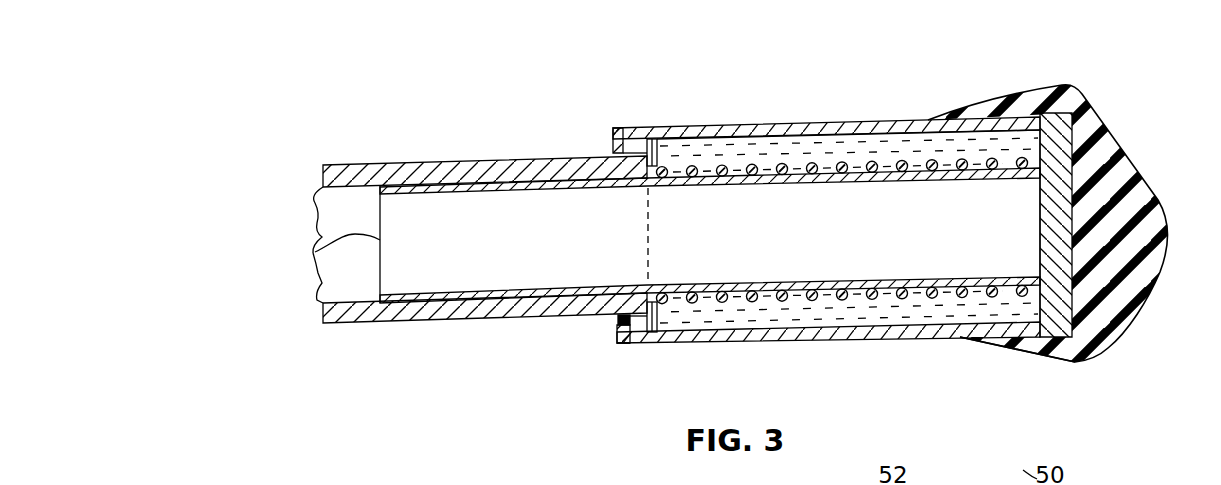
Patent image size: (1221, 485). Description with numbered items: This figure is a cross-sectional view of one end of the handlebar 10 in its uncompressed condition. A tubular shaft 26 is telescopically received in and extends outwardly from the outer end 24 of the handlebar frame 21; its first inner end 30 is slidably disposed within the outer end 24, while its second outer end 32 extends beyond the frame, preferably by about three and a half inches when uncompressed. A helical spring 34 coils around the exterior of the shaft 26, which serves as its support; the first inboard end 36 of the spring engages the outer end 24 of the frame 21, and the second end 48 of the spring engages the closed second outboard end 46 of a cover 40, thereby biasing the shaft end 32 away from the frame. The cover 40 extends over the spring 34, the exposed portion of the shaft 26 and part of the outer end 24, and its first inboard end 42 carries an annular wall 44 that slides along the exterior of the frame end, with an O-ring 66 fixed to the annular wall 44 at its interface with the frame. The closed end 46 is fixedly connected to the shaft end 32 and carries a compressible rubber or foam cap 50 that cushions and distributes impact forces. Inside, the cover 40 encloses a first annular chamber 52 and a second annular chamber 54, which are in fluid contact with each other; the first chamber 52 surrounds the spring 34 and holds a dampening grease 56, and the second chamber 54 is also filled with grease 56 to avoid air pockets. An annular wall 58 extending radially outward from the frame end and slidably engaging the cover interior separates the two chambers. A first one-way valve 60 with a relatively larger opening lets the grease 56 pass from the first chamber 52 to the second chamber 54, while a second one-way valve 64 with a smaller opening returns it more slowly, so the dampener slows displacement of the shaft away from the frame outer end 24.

The handlebar 10 is at (437, 158).
The handlebar frame 21 is at (323, 169).
The outer end of the handlebar frame 24 is at (540, 157).
The tubular shaft 26 is at (733, 163).
The first inner end of the shaft 30 is at (316, 252).
The second outer end of the shaft 32 is at (1040, 176).
The helical spring 34 is at (850, 158).
The first inboard end of the spring 36 is at (660, 304).
The cover 40 is at (835, 348).
The first inboard end of the cover 42 is at (613, 131).
The annular wall 44 is at (617, 328).
The second outboard end of the cover 46 is at (1060, 303).
The second end of the spring 48 is at (1003, 345).
The compressible cap 50 is at (1035, 84).
The first annular chamber 52 is at (800, 128).
The second annular chamber 54 is at (642, 137).
The dampening grease 56 is at (912, 150).
The annular wall 58 is at (630, 334).
The first one-way valve 60 is at (654, 137).
The second one-way valve 64 is at (653, 333).
The O-ring 66 is at (615, 321).